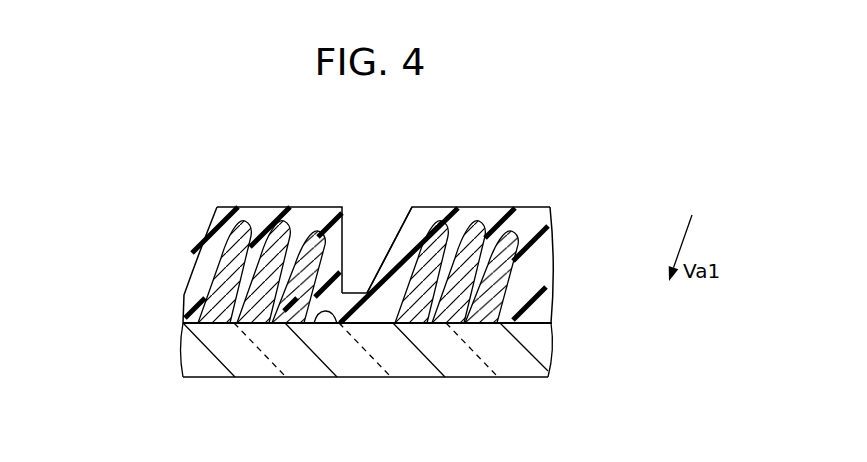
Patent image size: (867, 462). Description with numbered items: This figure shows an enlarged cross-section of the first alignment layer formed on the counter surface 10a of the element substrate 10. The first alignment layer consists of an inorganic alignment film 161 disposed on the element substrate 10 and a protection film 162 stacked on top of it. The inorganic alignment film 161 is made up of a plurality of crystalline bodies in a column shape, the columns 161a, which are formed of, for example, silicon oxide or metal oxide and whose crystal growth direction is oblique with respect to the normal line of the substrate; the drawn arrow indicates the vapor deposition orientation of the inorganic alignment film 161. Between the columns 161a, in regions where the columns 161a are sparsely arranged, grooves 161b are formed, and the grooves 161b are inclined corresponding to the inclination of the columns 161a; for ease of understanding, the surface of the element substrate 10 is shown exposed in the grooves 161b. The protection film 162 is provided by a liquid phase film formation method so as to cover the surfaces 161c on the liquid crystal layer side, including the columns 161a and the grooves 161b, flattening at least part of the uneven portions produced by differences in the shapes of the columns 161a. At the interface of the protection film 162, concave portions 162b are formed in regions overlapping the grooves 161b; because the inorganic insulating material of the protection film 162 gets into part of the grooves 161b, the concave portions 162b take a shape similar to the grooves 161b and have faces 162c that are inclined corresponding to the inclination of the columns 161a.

The element substrate 10 is at (535, 343).
The counter surface 10a is at (184, 300).
The inorganic alignment film 161 is at (531, 290).
The columns 161a is at (473, 222).
The grooves 161b is at (327, 323).
The surfaces 161c is at (295, 208).
The protection film 162 is at (535, 222).
The concave portions 162b is at (362, 291).
The faces 162c is at (392, 240).